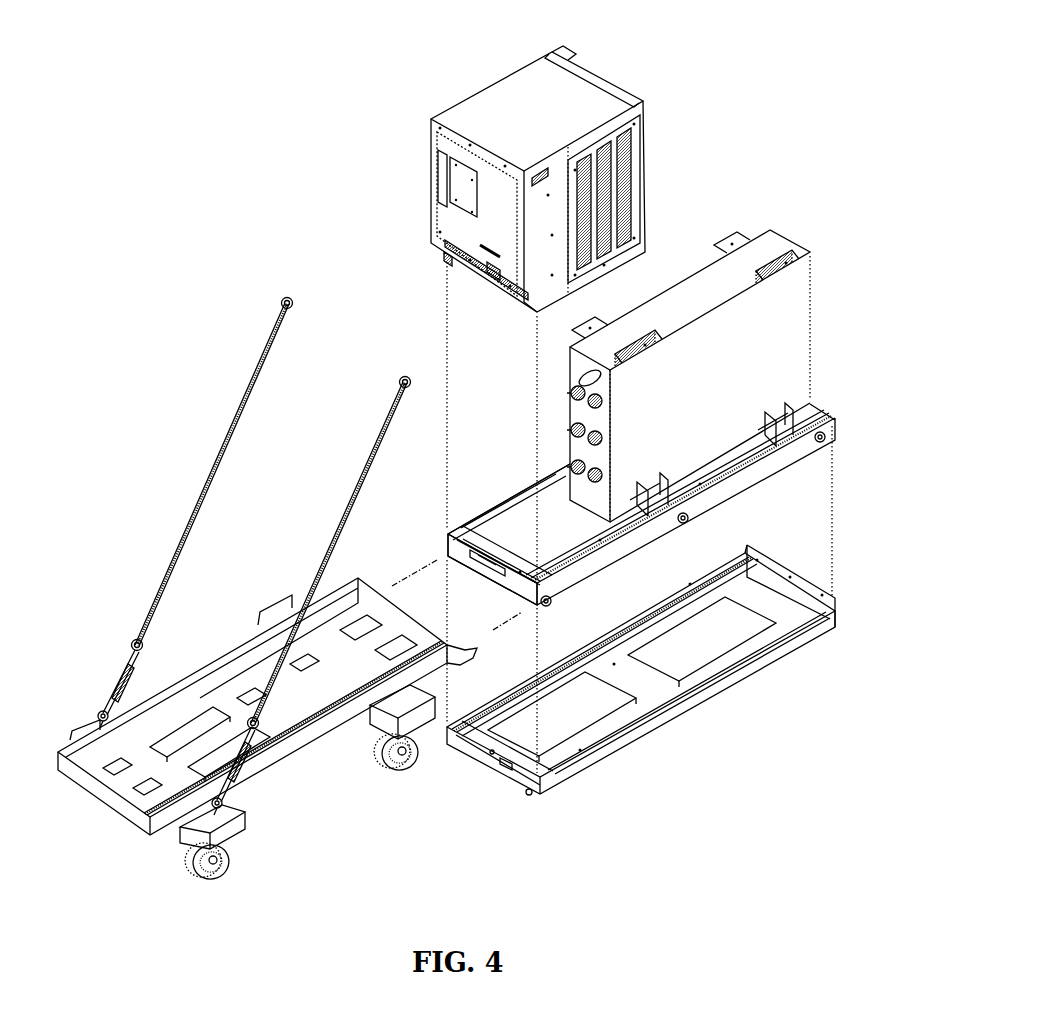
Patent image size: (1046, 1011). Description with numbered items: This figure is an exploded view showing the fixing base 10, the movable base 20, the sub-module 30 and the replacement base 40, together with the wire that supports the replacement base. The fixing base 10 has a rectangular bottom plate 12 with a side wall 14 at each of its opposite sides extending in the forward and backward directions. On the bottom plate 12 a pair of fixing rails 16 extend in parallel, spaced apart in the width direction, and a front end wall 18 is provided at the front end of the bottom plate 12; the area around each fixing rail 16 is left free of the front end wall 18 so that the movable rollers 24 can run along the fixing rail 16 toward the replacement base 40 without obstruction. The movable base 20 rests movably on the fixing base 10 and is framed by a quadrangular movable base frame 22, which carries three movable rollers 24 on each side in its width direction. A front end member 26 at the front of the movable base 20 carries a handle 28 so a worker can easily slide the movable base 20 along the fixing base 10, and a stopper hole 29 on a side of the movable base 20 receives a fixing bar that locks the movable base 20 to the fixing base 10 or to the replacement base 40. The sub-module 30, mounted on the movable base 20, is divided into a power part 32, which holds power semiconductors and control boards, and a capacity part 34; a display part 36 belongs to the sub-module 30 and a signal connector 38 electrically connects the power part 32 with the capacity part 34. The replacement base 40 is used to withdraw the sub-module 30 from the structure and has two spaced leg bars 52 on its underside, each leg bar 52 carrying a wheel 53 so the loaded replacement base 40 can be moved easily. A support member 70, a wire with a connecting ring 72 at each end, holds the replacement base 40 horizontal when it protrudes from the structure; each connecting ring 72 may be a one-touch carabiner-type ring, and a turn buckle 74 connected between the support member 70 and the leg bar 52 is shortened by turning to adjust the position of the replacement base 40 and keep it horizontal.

The fixing base 10 is at (714, 700).
The bottom plate 12 is at (652, 686).
The side wall 14 is at (750, 663).
The fixing rail 16 is at (527, 793).
The front end wall 18 is at (497, 757).
The movable base 20 is at (518, 480).
The movable base frame 22 is at (493, 503).
The movable roller 24 is at (818, 443).
The front end member 26 is at (438, 557).
The handle 28 is at (470, 578).
The stopper hole 29 is at (693, 490).
The sub-module 30 is at (670, 100).
The power part 32 is at (488, 94).
The capacity part 34 is at (740, 240).
The display part 36 is at (510, 298).
The signal connector 38 is at (587, 484).
The replacement base 40 is at (222, 648).
The leg bar 52 is at (190, 842).
The wheel 53 is at (232, 857).
The support member 70 is at (350, 506).
The connecting ring 72 is at (400, 380).
The turn buckle 74 is at (125, 707).